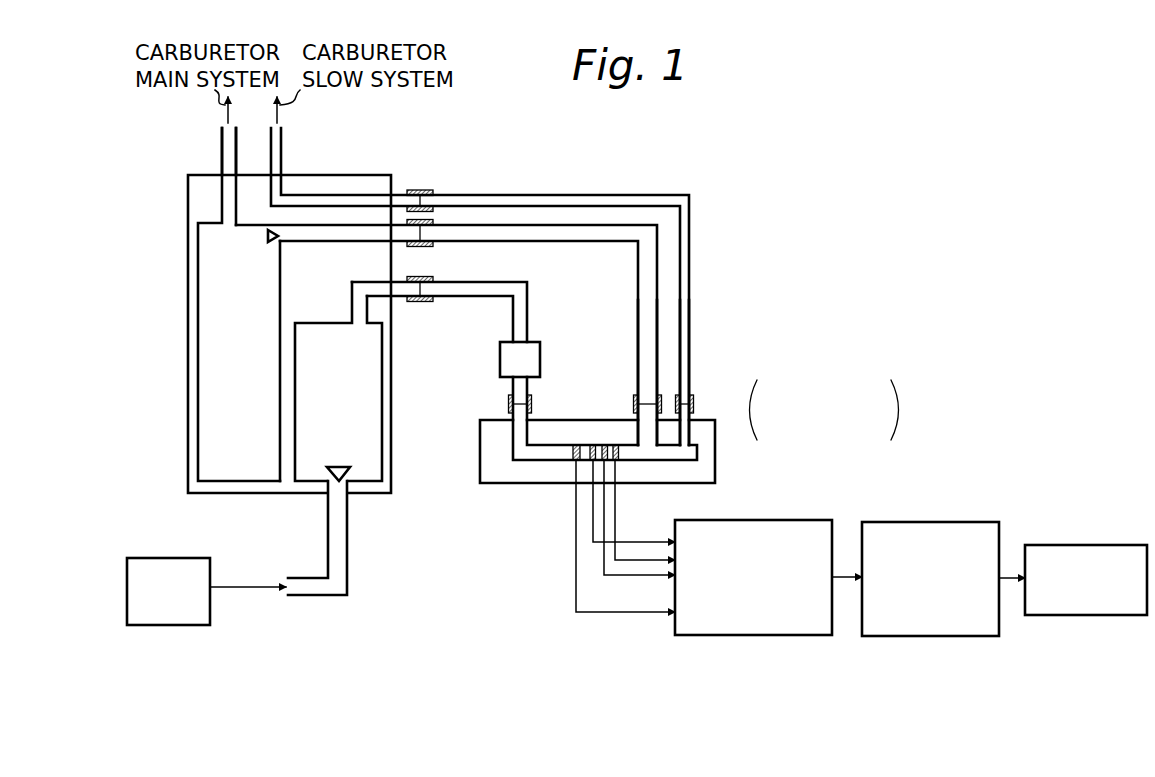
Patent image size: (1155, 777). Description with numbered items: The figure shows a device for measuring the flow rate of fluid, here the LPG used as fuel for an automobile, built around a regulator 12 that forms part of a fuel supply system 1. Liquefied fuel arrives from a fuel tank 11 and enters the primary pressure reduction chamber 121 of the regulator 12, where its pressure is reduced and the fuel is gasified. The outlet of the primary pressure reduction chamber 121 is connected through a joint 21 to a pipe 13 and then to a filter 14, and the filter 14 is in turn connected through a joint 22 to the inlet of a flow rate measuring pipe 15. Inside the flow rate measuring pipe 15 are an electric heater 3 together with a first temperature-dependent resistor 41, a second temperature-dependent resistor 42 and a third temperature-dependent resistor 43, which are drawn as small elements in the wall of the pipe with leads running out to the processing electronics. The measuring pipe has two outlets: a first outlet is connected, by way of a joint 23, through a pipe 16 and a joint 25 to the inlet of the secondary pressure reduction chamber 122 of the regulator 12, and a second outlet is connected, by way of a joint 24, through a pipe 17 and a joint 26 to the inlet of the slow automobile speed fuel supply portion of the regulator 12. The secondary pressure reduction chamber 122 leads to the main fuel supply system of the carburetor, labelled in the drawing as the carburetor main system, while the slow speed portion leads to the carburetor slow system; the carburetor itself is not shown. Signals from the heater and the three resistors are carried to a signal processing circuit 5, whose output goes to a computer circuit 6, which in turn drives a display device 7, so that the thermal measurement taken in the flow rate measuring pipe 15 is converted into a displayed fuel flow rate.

The fuel supply system 1 is at (186, 174).
The fuel tank 11 is at (180, 558).
The regulator 12 is at (354, 175).
The primary pressure reduction chamber 121 is at (378, 388).
The secondary pressure reduction chamber 122 is at (200, 313).
The pipe 13 is at (478, 298).
The filter 14 is at (540, 342).
The flow rate measuring pipe 15 is at (716, 420).
The pipe 16 is at (637, 283).
The pipe 17 is at (689, 275).
The joint 21 is at (432, 277).
The joint 22 is at (508, 402).
The joint 23 is at (634, 394).
The joint 24 is at (692, 395).
The joint 25 is at (434, 247).
The joint 26 is at (432, 190).
The electric heater 3 is at (605, 445).
The first temperature-dependent resistor 41 is at (620, 450).
The second temperature-dependent resistor 42 is at (592, 445).
The third temperature-dependent resistor 43 is at (575, 445).
The signal processing circuit 5 is at (808, 520).
The computer circuit 6 is at (962, 522).
The display device 7 is at (1088, 545).